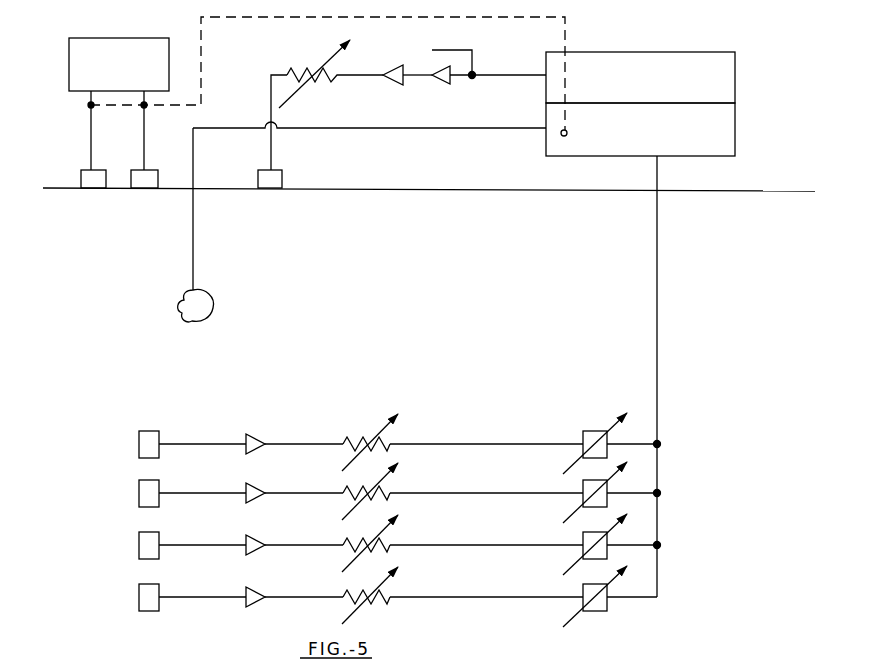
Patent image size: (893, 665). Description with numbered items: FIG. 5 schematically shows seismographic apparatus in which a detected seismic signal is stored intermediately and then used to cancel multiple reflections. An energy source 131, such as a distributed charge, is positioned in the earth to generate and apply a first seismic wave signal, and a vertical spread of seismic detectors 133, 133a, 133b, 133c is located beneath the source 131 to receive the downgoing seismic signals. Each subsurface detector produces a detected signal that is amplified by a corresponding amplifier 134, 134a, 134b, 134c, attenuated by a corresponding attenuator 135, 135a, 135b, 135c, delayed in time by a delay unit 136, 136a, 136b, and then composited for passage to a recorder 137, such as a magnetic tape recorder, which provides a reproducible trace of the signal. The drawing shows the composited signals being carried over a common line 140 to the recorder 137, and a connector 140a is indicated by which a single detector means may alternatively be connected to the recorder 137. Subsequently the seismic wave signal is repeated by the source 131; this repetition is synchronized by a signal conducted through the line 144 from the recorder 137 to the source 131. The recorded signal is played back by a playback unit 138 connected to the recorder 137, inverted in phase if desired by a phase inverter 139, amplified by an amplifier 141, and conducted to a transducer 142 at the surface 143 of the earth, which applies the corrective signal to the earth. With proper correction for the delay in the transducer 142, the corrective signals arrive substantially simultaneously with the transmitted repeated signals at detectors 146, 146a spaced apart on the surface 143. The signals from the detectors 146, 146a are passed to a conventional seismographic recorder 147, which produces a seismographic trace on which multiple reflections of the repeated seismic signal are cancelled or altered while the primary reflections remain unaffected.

The energy source 131 is at (192, 320).
The seismic detector 133 is at (138, 444).
The seismic detector 133a is at (138, 493).
The seismic detector 133b is at (138, 545).
The seismic detector 133c is at (138, 597).
The amplifier 134 is at (262, 438).
The amplifier 134a is at (262, 470).
The amplifier 134b is at (262, 539).
The amplifier 134c is at (262, 574).
The attenuator 135 is at (390, 440).
The attenuator 135a is at (390, 489).
The attenuator 135b is at (390, 541).
The attenuator 135c is at (390, 593).
The delay unit 136 is at (582, 437).
The delay unit 136a is at (582, 489).
The delay unit 136b is at (582, 541).
The recorder 137 is at (727, 143).
The playback unit 138 is at (730, 92).
The phase inverter 139 is at (447, 80).
The recorder input line 140 is at (657, 339).
The connector 140a is at (297, 20).
The amplifier 141 is at (387, 73).
The transducer 142 is at (275, 180).
The surface of the earth 143 is at (537, 188).
The line 144 is at (360, 129).
The detector 146 is at (93, 183).
The detector 146a is at (173, 213).
The seismographic recorder 147 is at (107, 73).